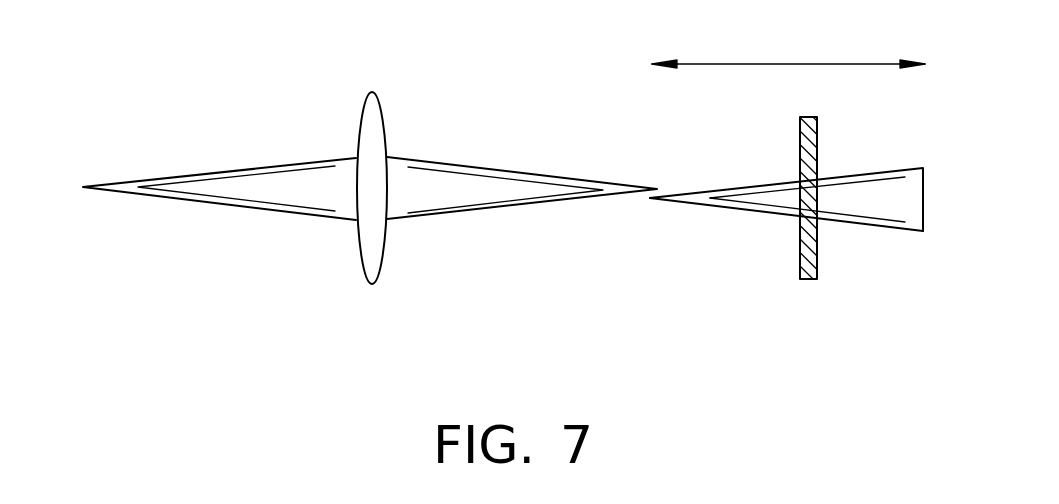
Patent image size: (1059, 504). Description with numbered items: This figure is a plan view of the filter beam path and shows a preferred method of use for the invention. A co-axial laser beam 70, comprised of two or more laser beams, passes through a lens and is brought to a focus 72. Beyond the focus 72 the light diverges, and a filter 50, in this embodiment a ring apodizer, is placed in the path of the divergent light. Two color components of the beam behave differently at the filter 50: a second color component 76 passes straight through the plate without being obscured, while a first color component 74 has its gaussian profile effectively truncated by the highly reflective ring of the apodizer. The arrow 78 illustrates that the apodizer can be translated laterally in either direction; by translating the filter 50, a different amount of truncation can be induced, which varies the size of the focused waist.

The filter 50 is at (807, 279).
The co-axial laser beam 70 is at (210, 224).
The focus 72 is at (637, 216).
The first color component 74 is at (857, 218).
The second color component 76 is at (839, 172).
The arrow 78 is at (783, 64).